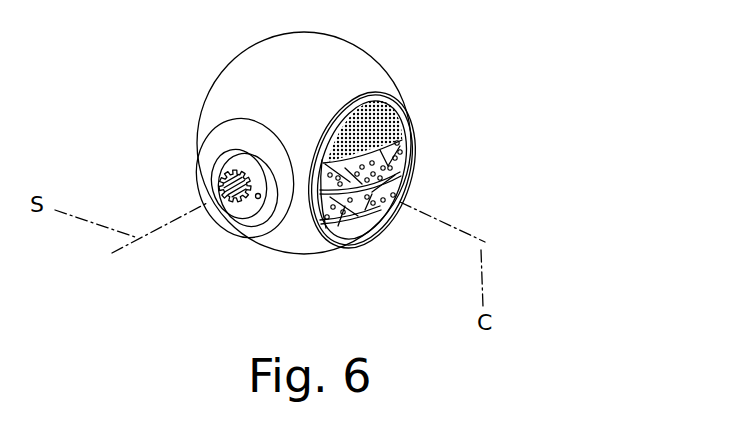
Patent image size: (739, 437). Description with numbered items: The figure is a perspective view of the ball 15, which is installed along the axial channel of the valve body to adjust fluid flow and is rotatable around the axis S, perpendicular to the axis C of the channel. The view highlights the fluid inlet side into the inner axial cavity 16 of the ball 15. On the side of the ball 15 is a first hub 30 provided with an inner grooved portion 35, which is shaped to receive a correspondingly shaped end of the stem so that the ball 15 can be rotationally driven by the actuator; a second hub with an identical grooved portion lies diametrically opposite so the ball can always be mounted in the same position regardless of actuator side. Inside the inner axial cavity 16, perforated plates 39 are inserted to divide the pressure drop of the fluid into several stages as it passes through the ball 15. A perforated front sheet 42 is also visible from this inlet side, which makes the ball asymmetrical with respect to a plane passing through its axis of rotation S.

The ball 15 is at (422, 79).
The inner axial cavity 16 is at (400, 221).
The first hub 30 is at (220, 157).
The inner grooved portion 35 is at (237, 193).
The perforated plates 39 is at (397, 200).
The perforated front sheet 42 is at (397, 107).